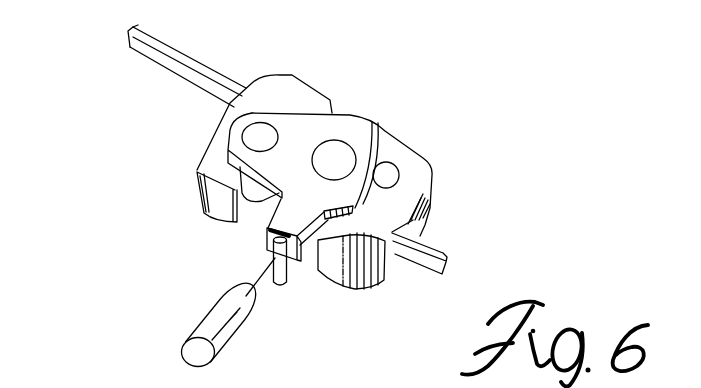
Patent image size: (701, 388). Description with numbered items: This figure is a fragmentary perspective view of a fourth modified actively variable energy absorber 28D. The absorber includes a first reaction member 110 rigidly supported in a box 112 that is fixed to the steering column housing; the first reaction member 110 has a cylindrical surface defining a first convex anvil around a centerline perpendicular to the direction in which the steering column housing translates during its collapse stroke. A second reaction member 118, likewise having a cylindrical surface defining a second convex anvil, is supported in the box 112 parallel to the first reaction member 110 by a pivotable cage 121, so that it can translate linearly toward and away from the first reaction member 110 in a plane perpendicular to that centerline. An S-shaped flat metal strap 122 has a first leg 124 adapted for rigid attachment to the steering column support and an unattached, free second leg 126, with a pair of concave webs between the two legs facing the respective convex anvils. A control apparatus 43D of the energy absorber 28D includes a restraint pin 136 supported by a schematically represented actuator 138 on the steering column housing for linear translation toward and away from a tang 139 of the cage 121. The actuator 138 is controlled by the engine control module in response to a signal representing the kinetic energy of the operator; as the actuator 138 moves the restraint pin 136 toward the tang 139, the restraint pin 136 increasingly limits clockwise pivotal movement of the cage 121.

The fourth modified actively variable energy absorber 28D is at (348, 148).
The box 112 is at (301, 64).
The second reaction member 118 is at (366, 133).
The pivotable cage 121 is at (345, 145).
The first reaction member 110 is at (390, 175).
The S-shaped flat metal strap 122 is at (163, 57).
The second leg 126 is at (137, 45).
The first leg 124 is at (420, 262).
The restraint pin 136 is at (288, 272).
The actuator 138 is at (237, 325).
The tang 139 is at (267, 236).
The control apparatus 43D is at (201, 312).